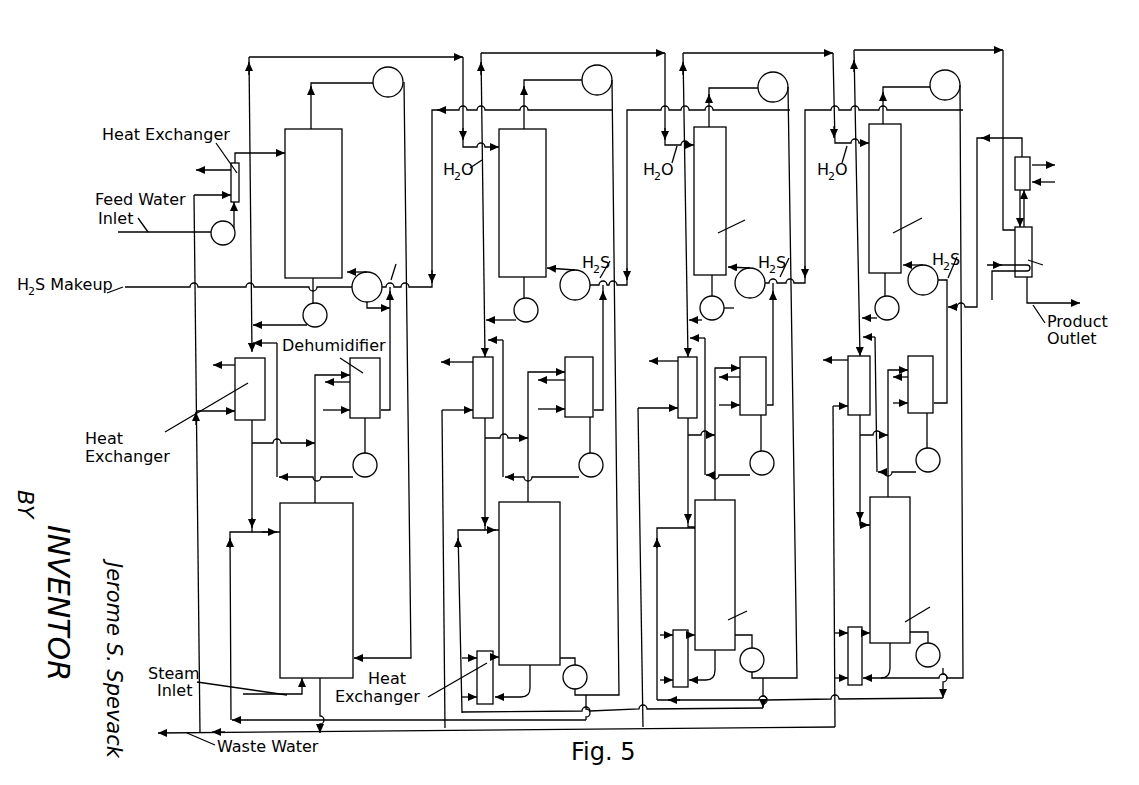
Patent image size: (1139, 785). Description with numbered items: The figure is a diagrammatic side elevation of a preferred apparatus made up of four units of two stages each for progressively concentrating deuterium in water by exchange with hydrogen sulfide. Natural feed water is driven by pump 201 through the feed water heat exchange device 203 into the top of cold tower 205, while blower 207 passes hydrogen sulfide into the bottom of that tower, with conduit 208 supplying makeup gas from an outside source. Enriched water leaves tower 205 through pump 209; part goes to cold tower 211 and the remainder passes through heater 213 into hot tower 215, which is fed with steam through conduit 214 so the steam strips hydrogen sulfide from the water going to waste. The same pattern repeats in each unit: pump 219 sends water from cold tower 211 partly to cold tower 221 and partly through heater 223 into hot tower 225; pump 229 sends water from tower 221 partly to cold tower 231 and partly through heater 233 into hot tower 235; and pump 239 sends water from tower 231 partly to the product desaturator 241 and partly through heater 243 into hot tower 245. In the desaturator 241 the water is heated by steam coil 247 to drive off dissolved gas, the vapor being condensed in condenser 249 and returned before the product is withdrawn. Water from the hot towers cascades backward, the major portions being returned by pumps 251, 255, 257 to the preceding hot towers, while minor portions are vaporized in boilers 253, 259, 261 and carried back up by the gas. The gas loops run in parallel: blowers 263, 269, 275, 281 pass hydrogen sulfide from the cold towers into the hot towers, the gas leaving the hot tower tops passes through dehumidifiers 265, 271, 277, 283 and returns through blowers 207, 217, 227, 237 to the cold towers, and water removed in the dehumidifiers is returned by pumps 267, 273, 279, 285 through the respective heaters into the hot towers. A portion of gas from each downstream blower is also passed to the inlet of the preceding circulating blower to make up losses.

The pump 201 is at (212, 236).
The feed water heat exchange device 203 is at (231, 182).
The cold tower 205 is at (343, 163).
The blower 207 is at (368, 271).
The conduit 208 is at (162, 288).
The pump 209 is at (326, 322).
The cold tower 211 is at (547, 147).
The heater 213 is at (235, 383).
The conduit 214 is at (282, 693).
The hot tower 215 is at (354, 562).
The blower 217 is at (576, 270).
The pump 219 is at (538, 310).
The cold tower 221 is at (727, 175).
The heater 223 is at (473, 380).
The hot tower 225 is at (561, 560).
The blower 227 is at (755, 268).
The pump 229 is at (733, 308).
The cold tower 231 is at (902, 173).
The heater 233 is at (678, 374).
The hot tower 235 is at (736, 558).
The blower 237 is at (926, 265).
The pump 239 is at (899, 308).
The product desaturator 241 is at (1033, 253).
The heater 243 is at (848, 372).
The hot tower 245 is at (911, 557).
The steam coil 247 is at (1008, 293).
The condenser 249 is at (1030, 158).
The pump 251 is at (583, 670).
The boiler 253 is at (482, 651).
The pump 255 is at (762, 652).
The pump 257 is at (937, 646).
The boiler 259 is at (680, 630).
The boiler 261 is at (853, 627).
The blower 263 is at (403, 79).
The dehumidifier 265 is at (382, 366).
The pump 267 is at (374, 475).
The blower 269 is at (612, 76).
The dehumidifier 271 is at (594, 361).
The pump 273 is at (600, 474).
The blower 275 is at (788, 81).
The dehumidifier 277 is at (768, 357).
The pump 279 is at (771, 473).
The blower 281 is at (959, 79).
The dehumidifier 283 is at (934, 358).
The pump 285 is at (937, 470).